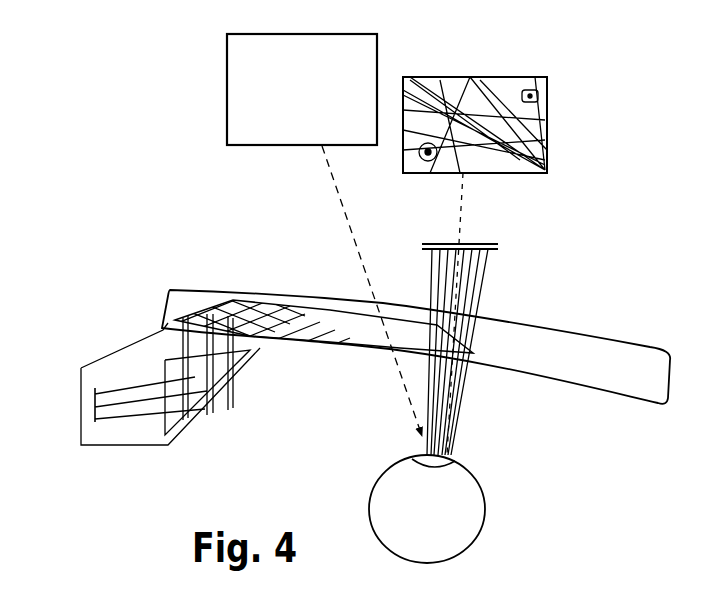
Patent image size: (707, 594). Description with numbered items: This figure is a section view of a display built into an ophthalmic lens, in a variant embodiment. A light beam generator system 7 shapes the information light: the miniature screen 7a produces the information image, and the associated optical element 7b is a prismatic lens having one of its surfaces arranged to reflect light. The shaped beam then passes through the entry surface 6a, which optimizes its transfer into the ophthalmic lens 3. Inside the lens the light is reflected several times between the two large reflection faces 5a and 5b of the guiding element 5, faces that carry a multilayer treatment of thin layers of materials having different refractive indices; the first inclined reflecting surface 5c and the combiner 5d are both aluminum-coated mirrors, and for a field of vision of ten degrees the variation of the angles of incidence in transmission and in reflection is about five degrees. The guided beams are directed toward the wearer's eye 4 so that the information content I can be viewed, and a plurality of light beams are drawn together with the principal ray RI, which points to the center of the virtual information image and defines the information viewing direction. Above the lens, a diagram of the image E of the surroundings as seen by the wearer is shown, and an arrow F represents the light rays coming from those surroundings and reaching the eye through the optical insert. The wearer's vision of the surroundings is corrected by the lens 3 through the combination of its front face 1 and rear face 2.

The spectacle lens 1 is at (553, 323).
The lens rear surface 2 is at (522, 365).
The lens body 3 is at (616, 362).
The eye 4 is at (494, 507).
The holographic optical element 5 is at (265, 300).
The upper surface of holographic element 5a is at (301, 302).
The lower surface of holographic element 5b is at (286, 342).
The input end of holographic element 5c is at (204, 312).
The output end of holographic element 5d is at (470, 332).
The coupling region 6a is at (168, 327).
The projection module 7 is at (128, 449).
The light source 7a is at (95, 405).
The prism 7b is at (205, 407).
The electronic unit E is at (222, 107).
The field of view / line of sight F is at (346, 200).
The image I is at (558, 119).
The retinal image beam RI is at (474, 203).